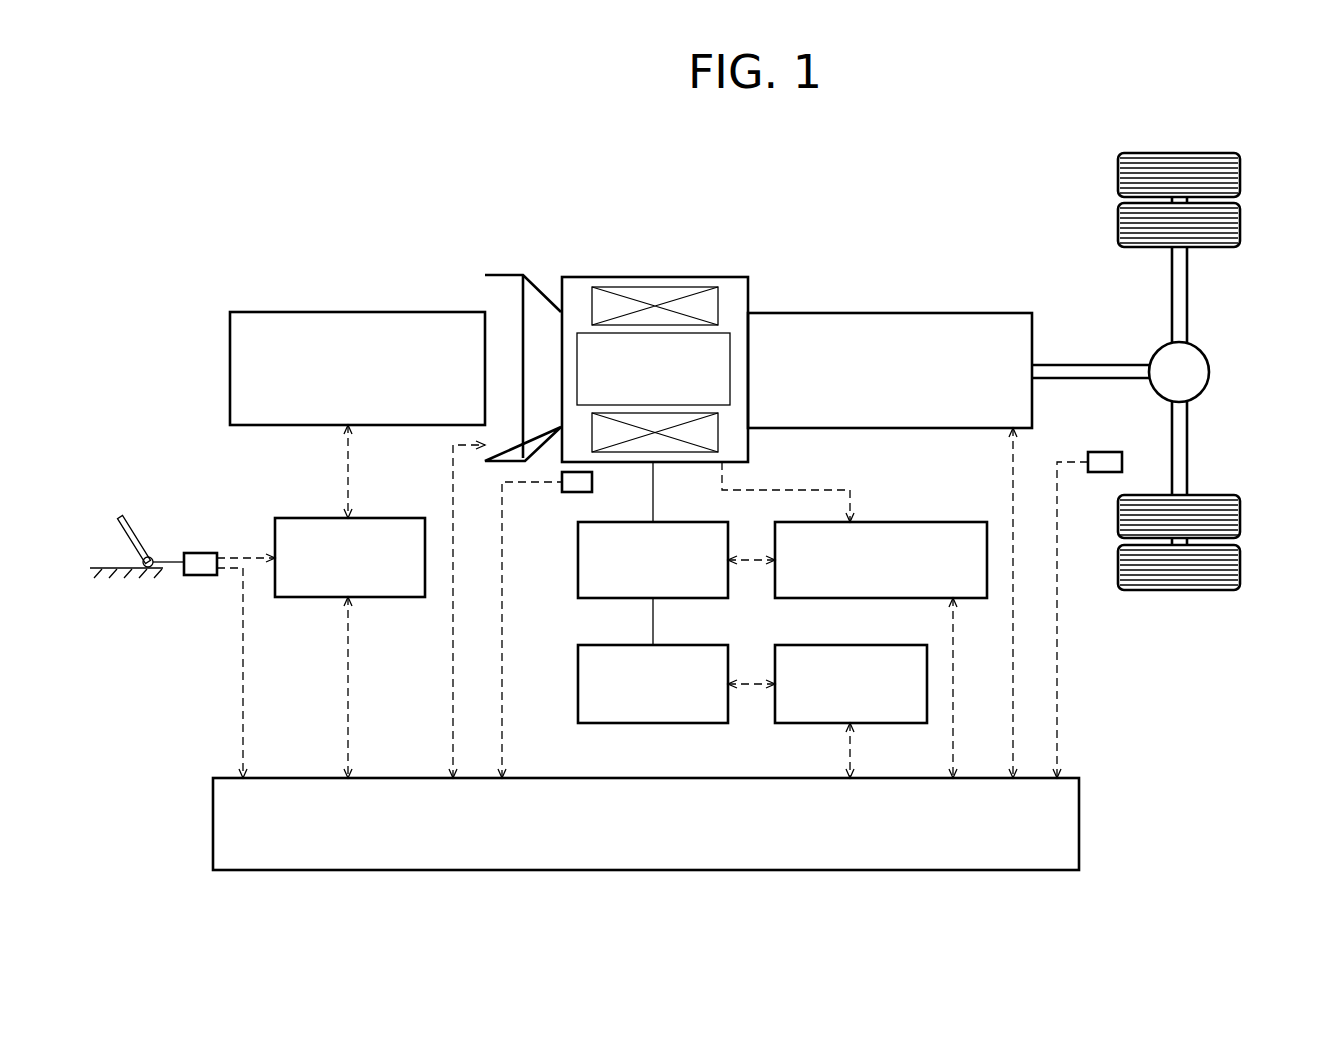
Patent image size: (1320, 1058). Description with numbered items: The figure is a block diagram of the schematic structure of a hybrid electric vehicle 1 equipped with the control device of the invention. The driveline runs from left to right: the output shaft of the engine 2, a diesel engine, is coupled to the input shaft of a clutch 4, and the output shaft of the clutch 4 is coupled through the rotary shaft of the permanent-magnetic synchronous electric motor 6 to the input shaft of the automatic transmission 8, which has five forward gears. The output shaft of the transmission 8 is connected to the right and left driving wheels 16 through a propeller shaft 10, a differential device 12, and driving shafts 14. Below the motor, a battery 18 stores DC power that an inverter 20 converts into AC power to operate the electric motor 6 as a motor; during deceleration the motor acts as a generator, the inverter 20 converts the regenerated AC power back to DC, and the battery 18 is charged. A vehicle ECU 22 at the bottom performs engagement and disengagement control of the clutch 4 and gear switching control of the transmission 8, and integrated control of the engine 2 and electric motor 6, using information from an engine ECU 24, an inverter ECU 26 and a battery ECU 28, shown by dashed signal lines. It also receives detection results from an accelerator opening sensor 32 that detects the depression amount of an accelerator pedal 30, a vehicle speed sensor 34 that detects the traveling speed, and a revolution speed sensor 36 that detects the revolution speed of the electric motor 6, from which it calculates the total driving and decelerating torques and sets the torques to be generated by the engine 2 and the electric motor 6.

The hybrid electric vehicle 1 is at (760, 205).
The engine 2 is at (270, 312).
The clutch 4 is at (501, 275).
The electric motor 6 is at (627, 277).
The transmission 8 is at (811, 313).
The propeller shaft 10 is at (1079, 364).
The differential device 12 is at (1209, 364).
The driving shafts 14 is at (1189, 284).
The driving wheels 16 is at (1241, 222).
The battery 18 is at (600, 723).
The inverter 20 is at (617, 522).
The vehicle ECU 22 is at (1080, 795).
The engine ECU 24 is at (303, 518).
The inverter ECU 26 is at (955, 522).
The battery ECU 28 is at (797, 723).
The accelerator pedal 30 is at (128, 518).
The accelerator opening sensor 32 is at (199, 553).
The vehicle speed sensor 34 is at (1102, 452).
The revolution speed sensor 36 is at (572, 492).